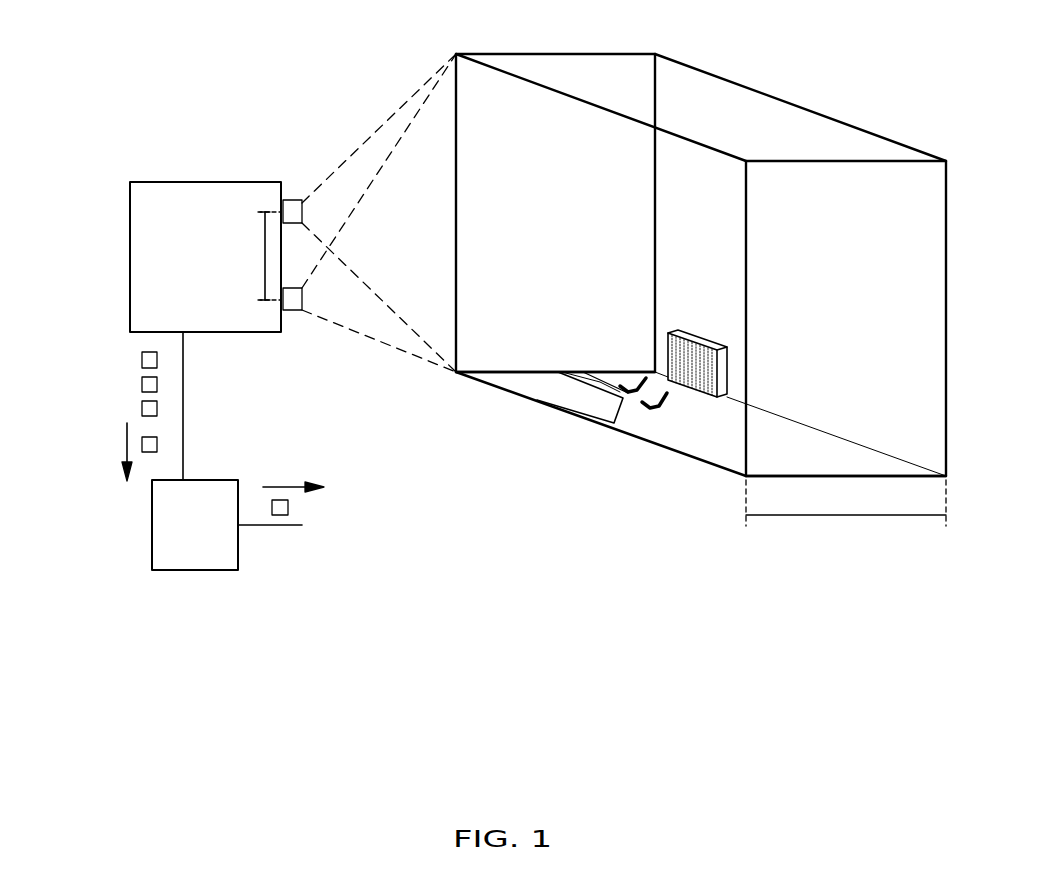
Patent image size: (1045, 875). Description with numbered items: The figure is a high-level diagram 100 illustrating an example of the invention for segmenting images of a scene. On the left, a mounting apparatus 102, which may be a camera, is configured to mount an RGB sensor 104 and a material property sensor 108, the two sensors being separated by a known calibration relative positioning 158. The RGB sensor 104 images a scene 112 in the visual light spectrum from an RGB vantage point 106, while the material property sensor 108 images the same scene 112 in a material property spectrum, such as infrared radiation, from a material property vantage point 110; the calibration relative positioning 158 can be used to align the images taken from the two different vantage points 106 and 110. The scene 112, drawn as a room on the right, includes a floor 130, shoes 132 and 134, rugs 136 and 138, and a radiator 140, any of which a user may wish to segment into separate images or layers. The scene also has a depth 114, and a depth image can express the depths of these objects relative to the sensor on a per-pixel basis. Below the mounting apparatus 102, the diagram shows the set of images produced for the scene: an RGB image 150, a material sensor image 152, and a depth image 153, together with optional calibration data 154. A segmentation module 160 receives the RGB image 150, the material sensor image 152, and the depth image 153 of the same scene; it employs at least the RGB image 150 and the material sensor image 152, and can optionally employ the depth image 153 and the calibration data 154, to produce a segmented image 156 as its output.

The high-level diagram 100 is at (307, 685).
The mounting apparatus 102 is at (130, 246).
The RGB sensor 104 is at (298, 200).
The RGB vantage point 106 is at (390, 118).
The material property sensor 108 is at (300, 312).
The material property vantage point 110 is at (388, 345).
The scene 112 is at (478, 98).
The depth 114 is at (846, 515).
The floor 130 is at (727, 437).
The shoe 132 is at (650, 410).
The shoe 134 is at (622, 398).
The rug 136 is at (535, 383).
The rug 138 is at (612, 378).
The radiator 140 is at (695, 342).
The RGB image 150 is at (150, 452).
The material sensor image 152 is at (142, 407).
The depth image 153 is at (142, 384).
The calibration data 154 is at (142, 358).
The segmented image 156 is at (289, 508).
The calibration relative positioning 158 is at (263, 257).
The segmentation module 160 is at (197, 570).